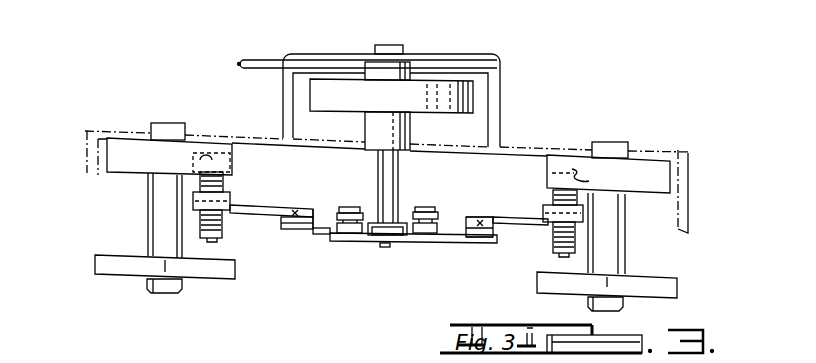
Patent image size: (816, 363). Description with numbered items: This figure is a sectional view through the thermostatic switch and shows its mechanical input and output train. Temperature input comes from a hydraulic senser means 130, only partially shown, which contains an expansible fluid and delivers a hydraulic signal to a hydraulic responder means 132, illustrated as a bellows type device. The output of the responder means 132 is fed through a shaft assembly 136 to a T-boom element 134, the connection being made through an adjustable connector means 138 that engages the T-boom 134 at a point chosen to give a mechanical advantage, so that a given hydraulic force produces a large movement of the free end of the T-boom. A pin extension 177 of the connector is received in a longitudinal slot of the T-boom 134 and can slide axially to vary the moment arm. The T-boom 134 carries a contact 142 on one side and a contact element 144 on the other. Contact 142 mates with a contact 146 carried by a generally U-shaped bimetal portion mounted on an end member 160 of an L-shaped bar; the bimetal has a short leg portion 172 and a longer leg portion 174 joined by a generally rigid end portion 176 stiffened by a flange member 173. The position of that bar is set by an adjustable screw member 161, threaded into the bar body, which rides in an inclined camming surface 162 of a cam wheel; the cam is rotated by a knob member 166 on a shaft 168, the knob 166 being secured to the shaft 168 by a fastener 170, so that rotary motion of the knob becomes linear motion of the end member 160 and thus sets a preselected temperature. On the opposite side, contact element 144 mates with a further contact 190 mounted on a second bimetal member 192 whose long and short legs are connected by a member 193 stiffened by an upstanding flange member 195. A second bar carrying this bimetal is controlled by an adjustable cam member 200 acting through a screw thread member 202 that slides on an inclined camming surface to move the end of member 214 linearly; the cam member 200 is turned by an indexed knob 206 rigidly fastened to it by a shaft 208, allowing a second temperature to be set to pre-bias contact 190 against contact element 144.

The hydraulic senser means 130 is at (270, 25).
The hydraulic responder means 132 is at (472, 98).
The T-boom element 134 is at (409, 248).
The shaft assembly 136 is at (399, 183).
The adjustable connector means 138 is at (357, 258).
The contact 142 is at (350, 235).
The contact element 144 is at (430, 246).
The contact 146 is at (388, 189).
The end member 160 is at (263, 204).
The adjustable screw member 161 is at (224, 238).
The inclined camming surface 162 is at (233, 165).
The knob member 166 is at (105, 273).
The shaft 168 is at (167, 194).
The fastener 170 is at (166, 124).
The short leg portion 172 is at (316, 232).
The flange member 173 is at (323, 222).
The longer leg portion 174 is at (361, 212).
The rigid end portion 176 is at (290, 250).
The pin extension 177 is at (381, 250).
The further contact 190 is at (429, 217).
The second bimetal member 192 is at (478, 240).
The connecting member 193 is at (458, 240).
The upstanding flange member 195 is at (488, 216).
The adjustable cam member 200 is at (662, 172).
The screw thread member 202 is at (555, 247).
The indexed knob 206 is at (657, 279).
The shaft 208 is at (610, 222).
The end member 214 is at (507, 222).